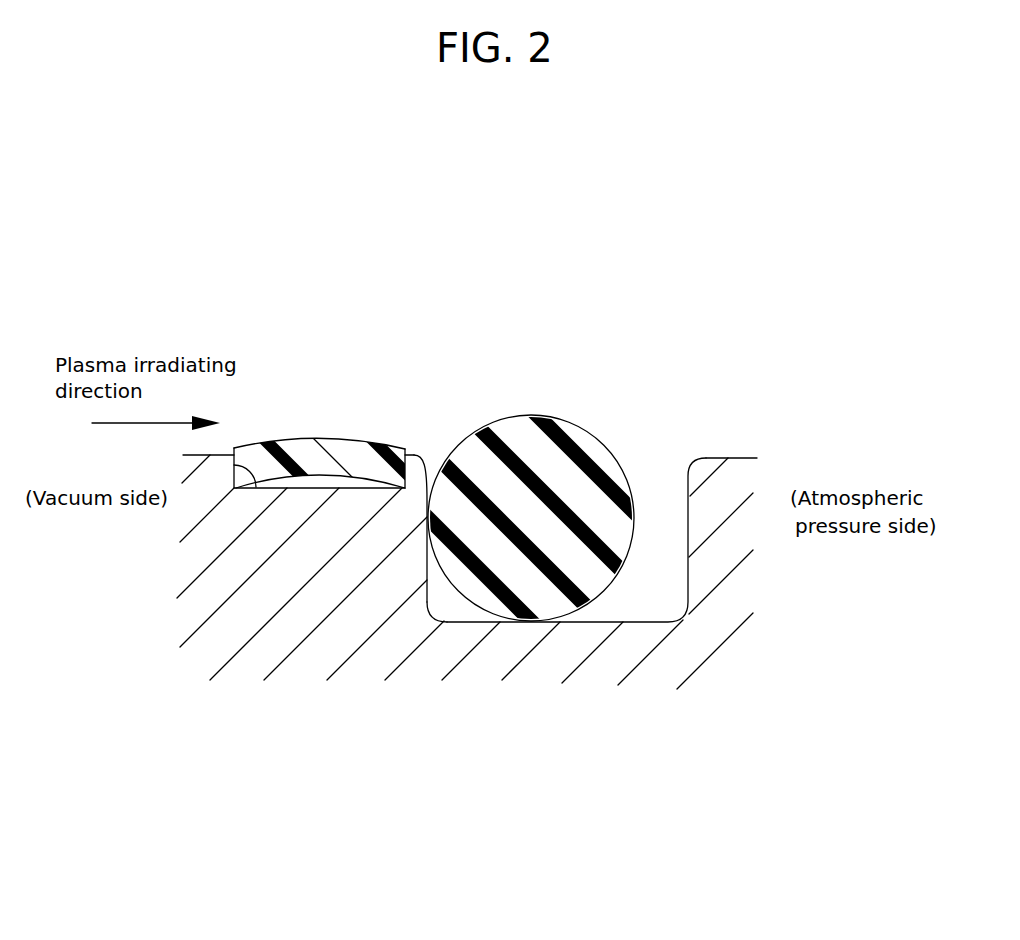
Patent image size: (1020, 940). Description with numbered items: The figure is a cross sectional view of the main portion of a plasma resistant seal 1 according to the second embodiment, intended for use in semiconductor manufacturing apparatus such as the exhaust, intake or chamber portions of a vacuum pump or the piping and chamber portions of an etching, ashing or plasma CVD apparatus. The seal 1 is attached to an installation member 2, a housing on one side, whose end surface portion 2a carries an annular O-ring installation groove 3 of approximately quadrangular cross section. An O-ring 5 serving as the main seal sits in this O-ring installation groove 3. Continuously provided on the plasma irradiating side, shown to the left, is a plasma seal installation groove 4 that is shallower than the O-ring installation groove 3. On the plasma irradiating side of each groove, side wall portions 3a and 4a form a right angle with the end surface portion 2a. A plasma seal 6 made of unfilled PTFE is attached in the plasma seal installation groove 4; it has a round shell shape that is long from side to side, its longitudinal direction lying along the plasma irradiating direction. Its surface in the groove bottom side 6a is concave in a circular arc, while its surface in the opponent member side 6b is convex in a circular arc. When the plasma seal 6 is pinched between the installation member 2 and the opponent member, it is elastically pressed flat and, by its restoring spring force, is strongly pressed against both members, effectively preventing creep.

The plasma resistant seal 1 is at (592, 396).
The installation member 2 is at (493, 566).
The end surface portion 2a is at (723, 460).
The O-ring installation groove 3 is at (620, 602).
The side wall portion 3a is at (427, 572).
The plasma seal installation groove 4 is at (325, 483).
The side wall portion 4a is at (253, 488).
The O-ring 5 is at (522, 447).
The plasma seal 6 is at (352, 457).
The surface in groove bottom side 6a is at (308, 477).
The surface in opponent member side 6b is at (311, 442).